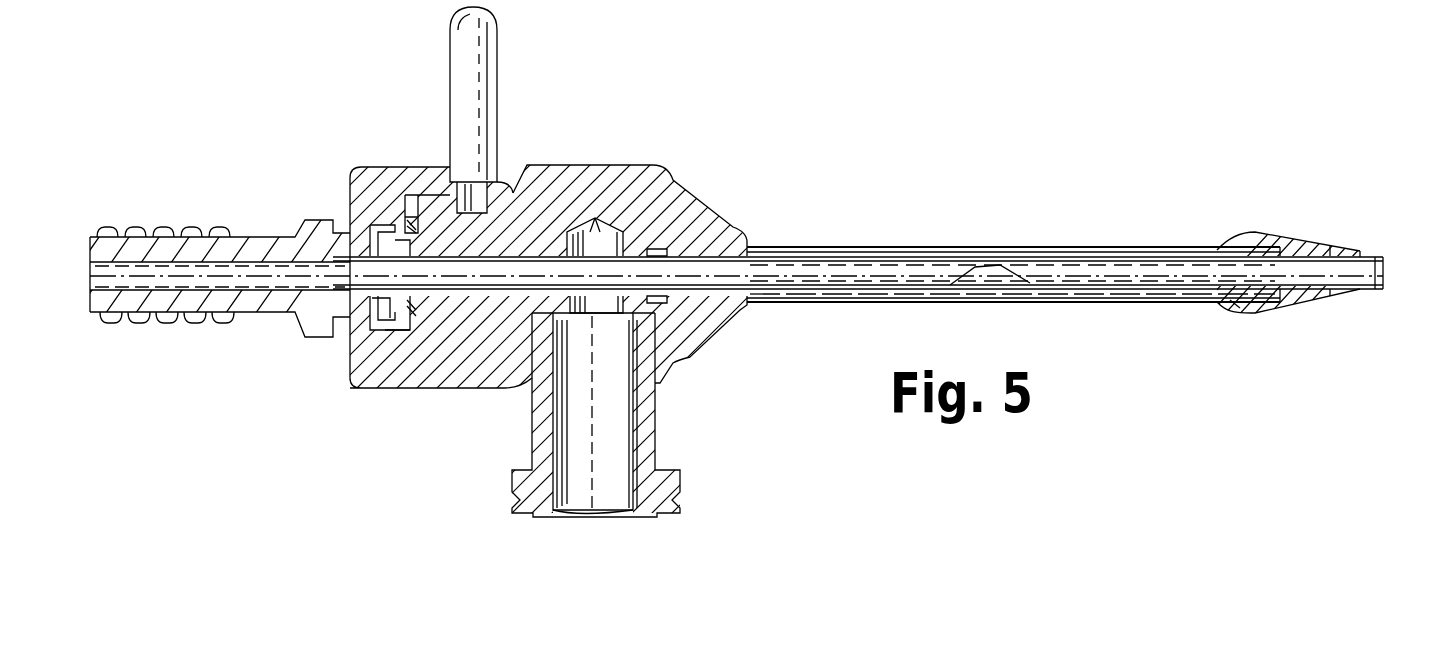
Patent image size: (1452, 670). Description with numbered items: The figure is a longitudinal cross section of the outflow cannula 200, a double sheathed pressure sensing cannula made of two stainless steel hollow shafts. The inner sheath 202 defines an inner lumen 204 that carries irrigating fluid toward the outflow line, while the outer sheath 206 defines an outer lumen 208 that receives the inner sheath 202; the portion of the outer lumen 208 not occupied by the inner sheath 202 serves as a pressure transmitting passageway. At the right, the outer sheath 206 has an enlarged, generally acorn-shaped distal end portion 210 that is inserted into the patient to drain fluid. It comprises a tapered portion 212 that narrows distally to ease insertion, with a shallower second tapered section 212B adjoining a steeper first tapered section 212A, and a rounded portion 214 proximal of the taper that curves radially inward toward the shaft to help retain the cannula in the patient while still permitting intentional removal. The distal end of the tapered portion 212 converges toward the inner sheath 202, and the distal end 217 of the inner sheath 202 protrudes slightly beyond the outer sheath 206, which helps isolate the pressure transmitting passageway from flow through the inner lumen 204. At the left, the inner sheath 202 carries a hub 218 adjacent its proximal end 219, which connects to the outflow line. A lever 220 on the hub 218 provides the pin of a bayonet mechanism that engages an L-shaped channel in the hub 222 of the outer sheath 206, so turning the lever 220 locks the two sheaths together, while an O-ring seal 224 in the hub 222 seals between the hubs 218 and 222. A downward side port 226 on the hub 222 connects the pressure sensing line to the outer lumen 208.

The outflow cannula 200 is at (727, 190).
The inner sheath 202 is at (1080, 268).
The inner lumen 204 is at (988, 282).
The outer sheath 206 is at (1154, 248).
The outer lumen 208 is at (812, 296).
The distal end portion 210 is at (1283, 316).
The tapered portion 212 is at (1273, 233).
The first tapered section 212A is at (1348, 250).
The second tapered section 212B is at (1313, 242).
The rounded portion 214 is at (1237, 312).
The distal end of the inner sheath 217 is at (1381, 267).
The hub 218 is at (396, 165).
The proximal end 219 is at (146, 235).
The lever 220 is at (474, 68).
The hub of the outer sheath 222 is at (601, 165).
The O-ring seal 224 is at (403, 333).
The side port 226 is at (622, 522).